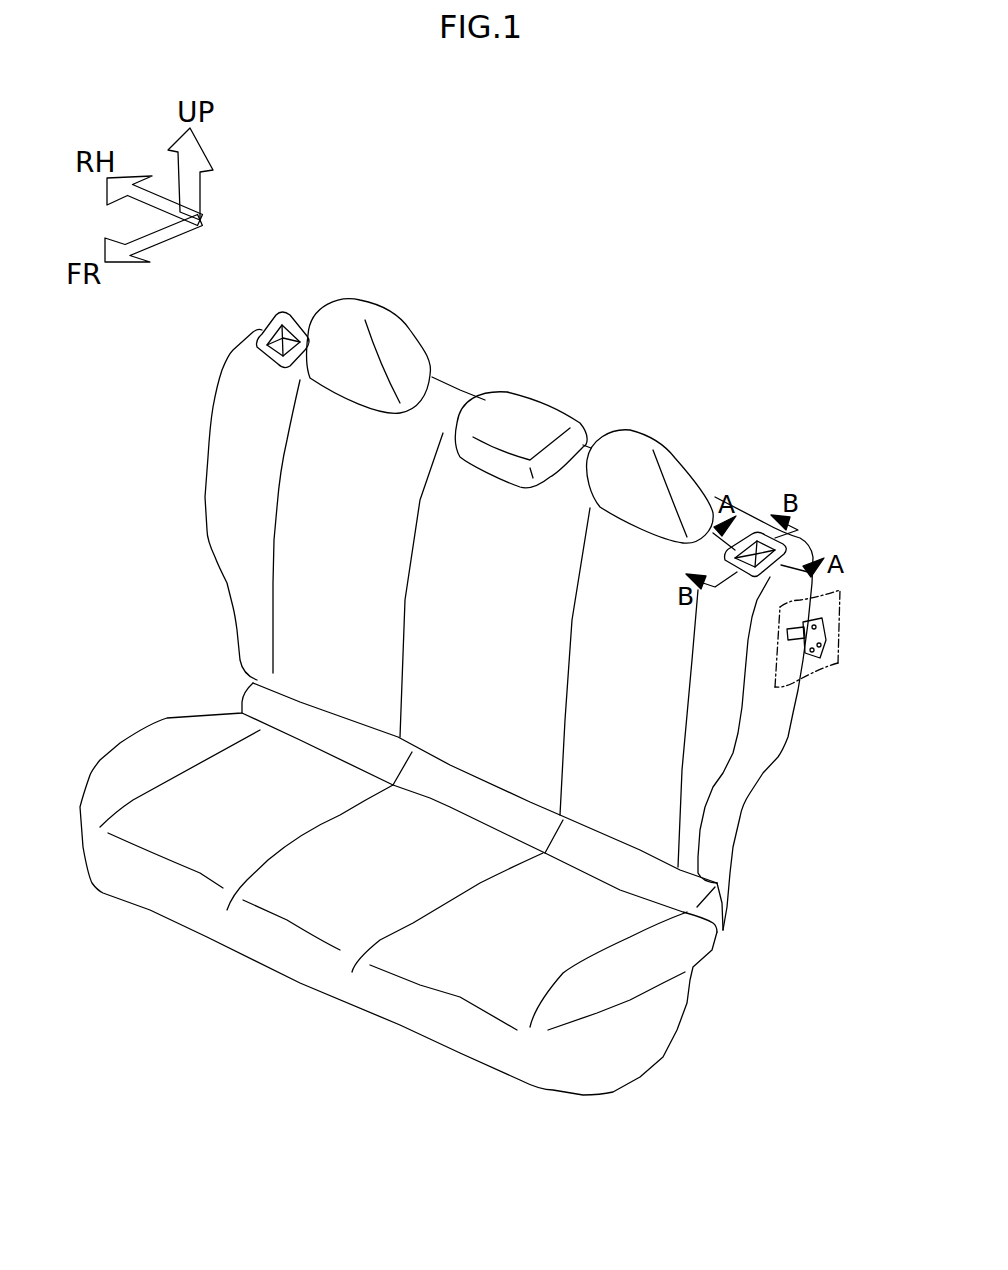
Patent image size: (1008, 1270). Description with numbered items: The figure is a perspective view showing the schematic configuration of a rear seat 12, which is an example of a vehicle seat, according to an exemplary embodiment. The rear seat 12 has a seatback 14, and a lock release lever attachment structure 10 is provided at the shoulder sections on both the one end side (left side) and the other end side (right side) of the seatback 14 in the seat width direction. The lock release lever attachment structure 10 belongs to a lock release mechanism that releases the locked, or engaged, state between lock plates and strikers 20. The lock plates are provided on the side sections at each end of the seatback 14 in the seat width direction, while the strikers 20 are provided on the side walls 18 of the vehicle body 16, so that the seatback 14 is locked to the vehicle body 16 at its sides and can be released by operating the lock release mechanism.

The lock release lever attachment structure 10 is at (268, 322).
The rear seat 12 is at (184, 451).
The seatback 14 is at (215, 504).
The vehicle body 16 is at (826, 678).
The side wall 18 is at (843, 630).
The striker 20 is at (780, 655).